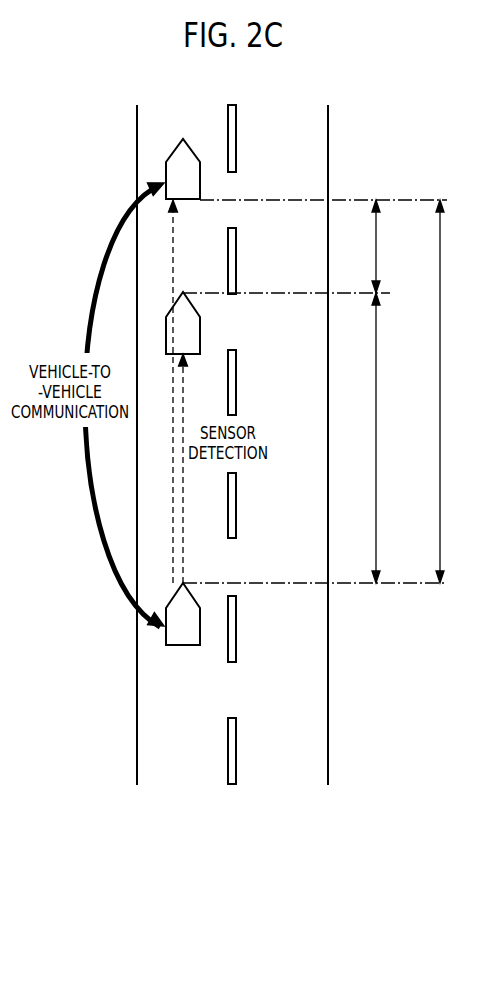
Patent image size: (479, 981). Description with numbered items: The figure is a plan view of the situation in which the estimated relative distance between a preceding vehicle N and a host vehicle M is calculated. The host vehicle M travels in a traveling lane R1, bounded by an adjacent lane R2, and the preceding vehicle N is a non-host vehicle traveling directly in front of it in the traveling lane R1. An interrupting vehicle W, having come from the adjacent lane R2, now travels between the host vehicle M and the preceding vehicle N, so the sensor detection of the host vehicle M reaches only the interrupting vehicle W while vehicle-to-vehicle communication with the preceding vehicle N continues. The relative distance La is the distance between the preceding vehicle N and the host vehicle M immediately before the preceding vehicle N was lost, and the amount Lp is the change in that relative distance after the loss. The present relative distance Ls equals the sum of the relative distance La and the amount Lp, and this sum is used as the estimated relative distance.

The preceding vehicle N is at (200, 186).
The interrupting vehicle W is at (200, 327).
The host vehicle M is at (200, 628).
The traveling lane R1 is at (188, 762).
The adjacent lane R2 is at (283, 762).
The amount of change in relative distance Lp is at (384, 246).
The relative distance immediately before loss La is at (384, 438).
The relative distance at present point in time Ls is at (448, 391).